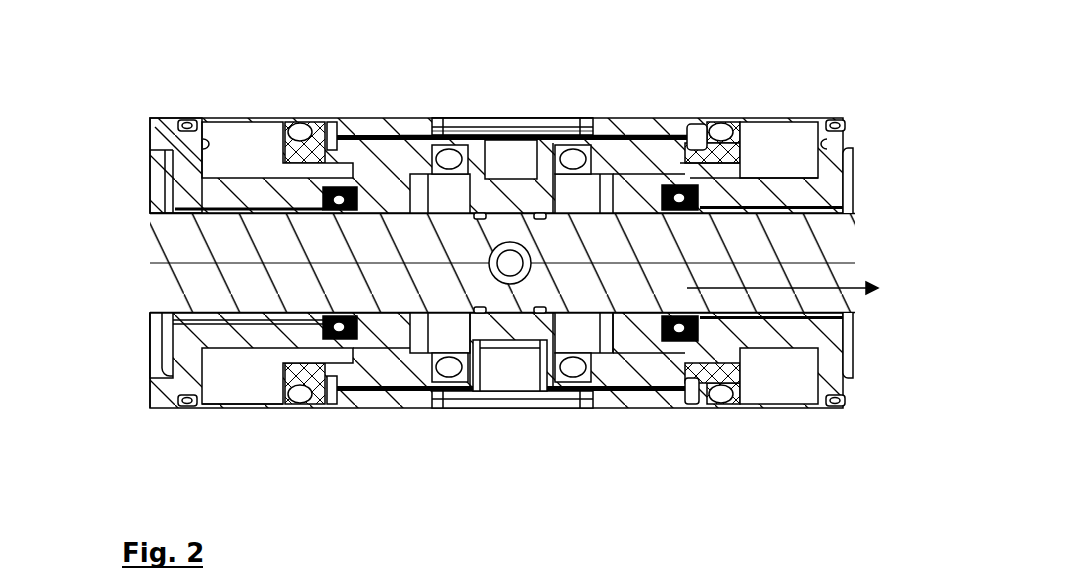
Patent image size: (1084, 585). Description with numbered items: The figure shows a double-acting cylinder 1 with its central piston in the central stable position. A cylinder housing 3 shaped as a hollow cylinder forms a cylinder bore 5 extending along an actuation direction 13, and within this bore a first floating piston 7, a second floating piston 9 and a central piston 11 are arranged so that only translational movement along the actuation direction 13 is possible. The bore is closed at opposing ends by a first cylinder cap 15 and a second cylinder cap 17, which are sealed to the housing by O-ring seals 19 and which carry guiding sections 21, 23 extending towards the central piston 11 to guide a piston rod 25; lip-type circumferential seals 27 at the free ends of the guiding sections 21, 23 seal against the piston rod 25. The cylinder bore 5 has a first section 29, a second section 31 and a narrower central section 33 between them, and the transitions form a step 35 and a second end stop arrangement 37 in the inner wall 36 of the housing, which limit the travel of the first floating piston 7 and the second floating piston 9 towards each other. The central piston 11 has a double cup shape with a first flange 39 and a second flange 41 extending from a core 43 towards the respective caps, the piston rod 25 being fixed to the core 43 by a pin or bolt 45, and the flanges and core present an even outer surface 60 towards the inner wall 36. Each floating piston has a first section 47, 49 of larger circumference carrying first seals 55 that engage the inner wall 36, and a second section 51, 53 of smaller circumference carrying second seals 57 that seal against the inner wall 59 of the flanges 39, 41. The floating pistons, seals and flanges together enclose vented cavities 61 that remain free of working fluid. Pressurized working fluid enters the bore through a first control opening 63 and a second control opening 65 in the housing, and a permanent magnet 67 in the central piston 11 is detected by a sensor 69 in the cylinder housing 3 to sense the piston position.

The double-acting cylinder 1 is at (156, 91).
The cylinder housing 3 is at (710, 118).
The cylinder bore 5 is at (255, 169).
The first floating piston 7 is at (291, 118).
The second floating piston 9 is at (630, 118).
The central piston 11 is at (490, 118).
The actuation direction 13 is at (840, 292).
The first cylinder cap 15 is at (152, 412).
The second cylinder cap 17 is at (800, 188).
The seals 19 is at (185, 412).
The guiding section 21 is at (230, 186).
The guiding section 23 is at (760, 343).
The piston rod 25 is at (195, 302).
The circumferential seals 27 is at (690, 205).
The first section 29 is at (214, 112).
The second section 31 is at (824, 110).
The central section 33 is at (471, 106).
The step 35 is at (328, 411).
The inner wall 36 is at (500, 411).
The second end stop arrangement 37 is at (690, 411).
The first flange 39 is at (398, 411).
The second flange 41 is at (610, 411).
The core 43 is at (553, 118).
The pin or bolt 45 is at (520, 260).
The first section 47 is at (262, 411).
The first section 49 is at (740, 411).
The second section 51 is at (356, 411).
The second section 53 is at (652, 411).
The first seals 55 is at (308, 118).
The second seals 57 is at (445, 118).
The inner wall 59 is at (368, 118).
The outer surface 60 is at (440, 411).
The cavities 61 is at (688, 118).
The first control opening 63 is at (211, 118).
The second control opening 65 is at (846, 125).
The permanent magnet 67 is at (501, 167).
The sensor 69 is at (505, 118).